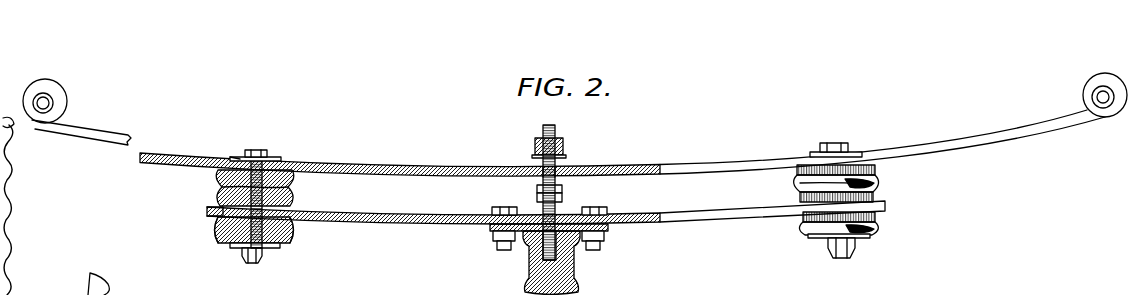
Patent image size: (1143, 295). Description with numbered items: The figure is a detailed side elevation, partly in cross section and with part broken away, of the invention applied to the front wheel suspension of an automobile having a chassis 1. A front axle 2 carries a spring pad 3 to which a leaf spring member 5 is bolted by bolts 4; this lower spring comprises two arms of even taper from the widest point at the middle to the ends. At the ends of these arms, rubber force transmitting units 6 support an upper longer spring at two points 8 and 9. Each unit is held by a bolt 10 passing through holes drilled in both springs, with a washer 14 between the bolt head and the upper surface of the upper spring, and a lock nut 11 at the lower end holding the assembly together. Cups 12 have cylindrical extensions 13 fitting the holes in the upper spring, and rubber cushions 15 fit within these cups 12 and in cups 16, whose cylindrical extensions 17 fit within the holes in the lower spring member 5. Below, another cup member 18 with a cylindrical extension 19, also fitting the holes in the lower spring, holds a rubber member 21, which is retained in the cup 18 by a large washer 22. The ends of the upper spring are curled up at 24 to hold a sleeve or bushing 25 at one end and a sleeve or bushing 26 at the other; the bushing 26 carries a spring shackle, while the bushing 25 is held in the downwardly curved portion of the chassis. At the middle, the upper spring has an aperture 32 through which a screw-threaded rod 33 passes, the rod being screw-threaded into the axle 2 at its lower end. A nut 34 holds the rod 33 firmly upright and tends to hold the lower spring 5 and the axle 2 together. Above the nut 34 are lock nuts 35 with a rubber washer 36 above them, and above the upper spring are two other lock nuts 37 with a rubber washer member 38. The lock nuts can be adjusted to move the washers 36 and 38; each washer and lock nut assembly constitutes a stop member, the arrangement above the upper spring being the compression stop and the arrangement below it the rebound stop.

The automobile chassis 1 is at (410, 165).
The front axle 2 is at (577, 269).
The spring pad 3 is at (610, 230).
The bolts 4 is at (607, 208).
The leaf spring member 5 is at (735, 216).
The rubber force transmitting units 6 is at (213, 192).
The support point 8 is at (283, 160).
The support point 9 is at (860, 157).
The bolts 10 is at (253, 150).
The lock nuts 11 is at (242, 252).
The cups 12 is at (220, 175).
The cylindrical extensions 13 is at (238, 158).
The washers 14 is at (273, 157).
The rubber cushions 15 is at (297, 198).
The cups 16 is at (213, 207).
The cylindrical extensions 17 is at (293, 227).
The cup member 18 is at (287, 230).
The cylindrical extension 19 is at (212, 220).
The rubber member 21 is at (282, 247).
The large washer 22 is at (272, 250).
The curled ends 24 is at (45, 84).
The sleeve or bushing 25 is at (37, 101).
The sleeve or bushing 26 is at (1106, 101).
The aperture 32 is at (567, 172).
The screw-threaded rod 33 is at (552, 125).
The nut 34 is at (530, 247).
The lock nuts 35 is at (537, 193).
The rubber washer 36 is at (567, 185).
The lock nuts 37 is at (563, 150).
The rubber washer member 38 is at (533, 157).